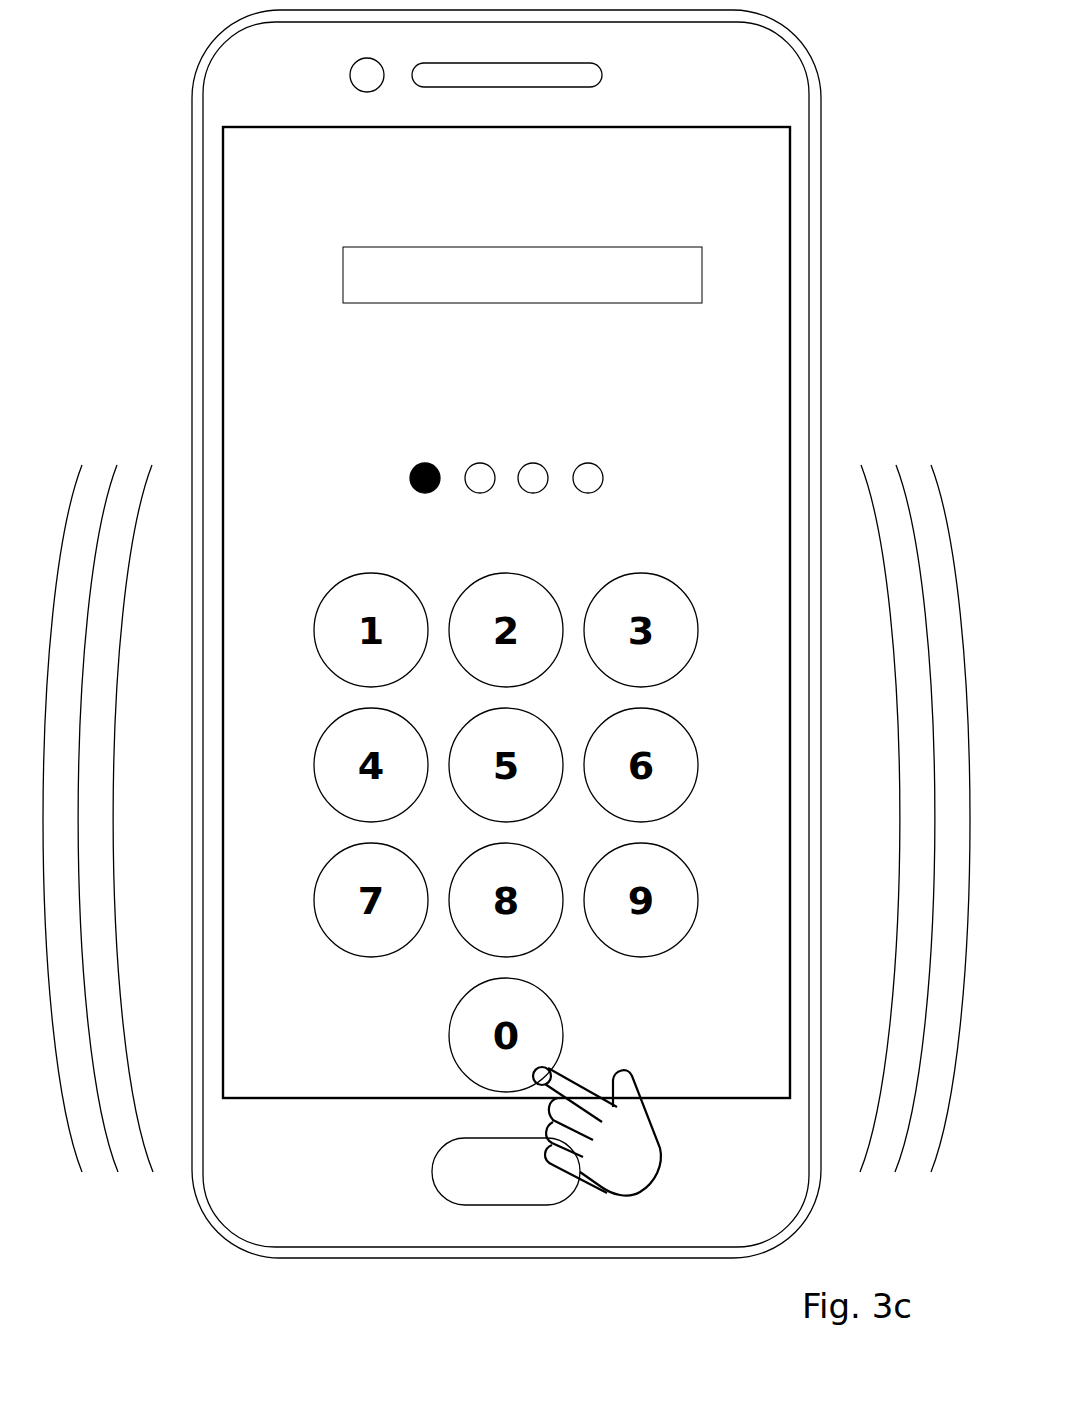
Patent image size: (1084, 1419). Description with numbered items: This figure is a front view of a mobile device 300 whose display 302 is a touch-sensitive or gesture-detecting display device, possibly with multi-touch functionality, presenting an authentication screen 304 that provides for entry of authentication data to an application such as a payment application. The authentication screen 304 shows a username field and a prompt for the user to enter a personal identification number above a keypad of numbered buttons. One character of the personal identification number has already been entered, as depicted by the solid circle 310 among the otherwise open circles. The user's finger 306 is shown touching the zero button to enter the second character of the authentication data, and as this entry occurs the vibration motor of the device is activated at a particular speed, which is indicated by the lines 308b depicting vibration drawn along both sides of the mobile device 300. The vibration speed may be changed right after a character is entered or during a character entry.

The mobile device 300 is at (260, 68).
The display 302 is at (222, 182).
The authentication screen 304 is at (267, 227).
The user's finger 306 is at (533, 1073).
The lines depicting vibration 308b is at (130, 1158).
The solid circle 310 is at (412, 470).